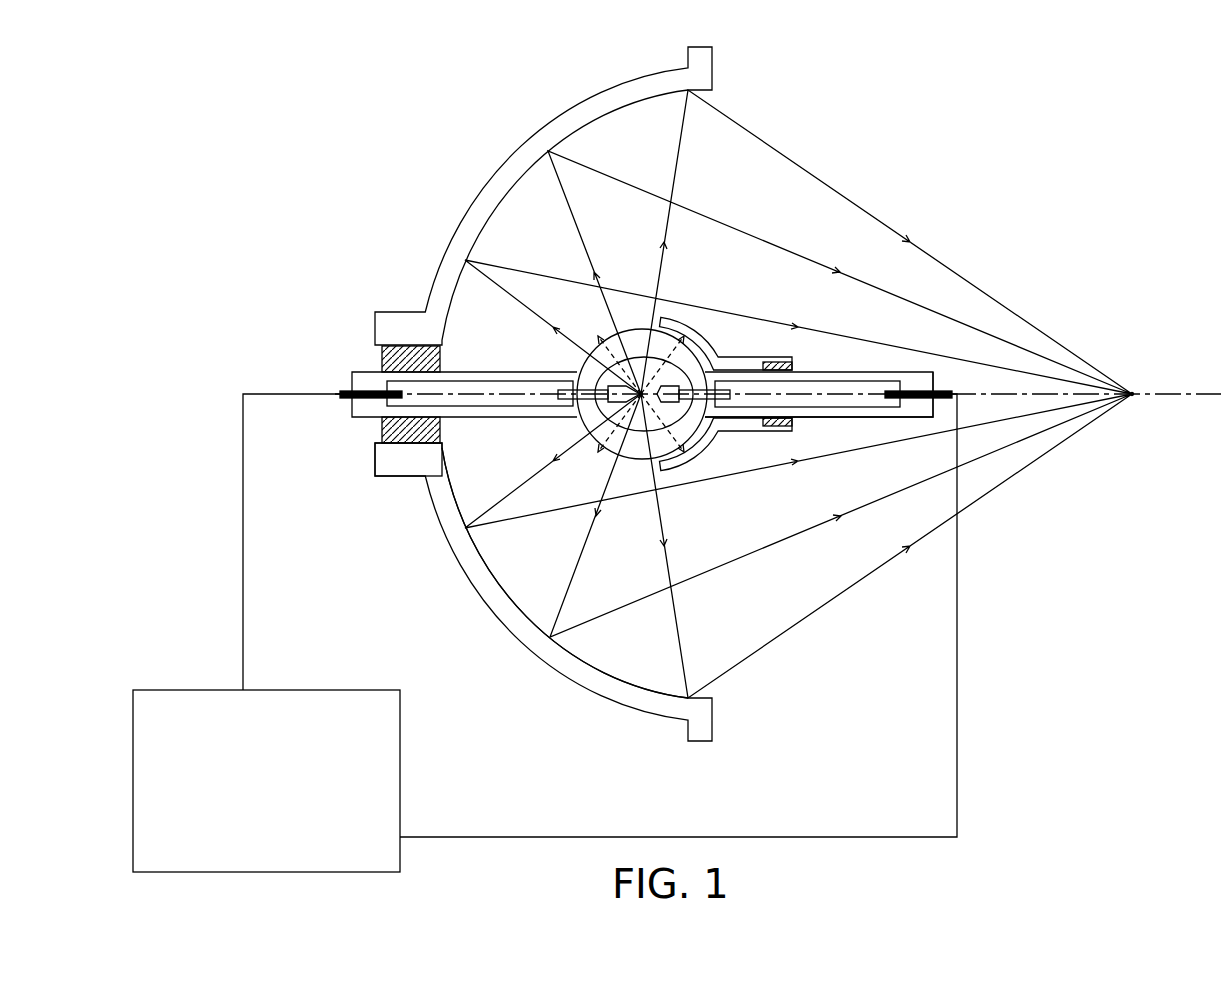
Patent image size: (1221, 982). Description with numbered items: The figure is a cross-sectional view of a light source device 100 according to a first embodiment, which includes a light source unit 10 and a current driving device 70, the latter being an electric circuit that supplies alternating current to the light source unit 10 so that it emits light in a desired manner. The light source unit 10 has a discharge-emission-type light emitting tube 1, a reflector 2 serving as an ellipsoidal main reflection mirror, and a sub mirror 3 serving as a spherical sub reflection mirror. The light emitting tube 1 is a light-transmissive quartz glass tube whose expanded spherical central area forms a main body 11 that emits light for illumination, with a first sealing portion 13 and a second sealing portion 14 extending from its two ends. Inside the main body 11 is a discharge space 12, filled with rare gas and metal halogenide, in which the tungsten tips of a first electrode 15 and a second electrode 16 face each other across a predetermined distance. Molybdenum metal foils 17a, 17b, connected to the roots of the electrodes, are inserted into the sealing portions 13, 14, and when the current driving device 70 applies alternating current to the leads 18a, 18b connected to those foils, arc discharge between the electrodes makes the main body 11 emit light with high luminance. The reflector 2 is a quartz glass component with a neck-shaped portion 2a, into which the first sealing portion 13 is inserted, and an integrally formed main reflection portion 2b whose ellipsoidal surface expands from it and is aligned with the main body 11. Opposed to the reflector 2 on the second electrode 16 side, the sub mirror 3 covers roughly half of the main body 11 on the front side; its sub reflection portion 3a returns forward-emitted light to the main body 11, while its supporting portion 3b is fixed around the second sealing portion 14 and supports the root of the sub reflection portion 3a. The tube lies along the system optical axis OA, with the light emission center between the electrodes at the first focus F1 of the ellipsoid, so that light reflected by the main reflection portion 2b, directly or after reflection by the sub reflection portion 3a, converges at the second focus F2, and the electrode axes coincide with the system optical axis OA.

The light source device 100 is at (1112, 73).
The light source unit 10 is at (822, 127).
The light emitting tube 1 is at (636, 387).
The reflector 2 is at (532, 143).
The neck-shaped portion 2a is at (407, 462).
The main reflection portion 2b is at (520, 638).
The sub mirror 3 is at (730, 383).
The sub reflection portion 3a is at (673, 320).
The supporting portion 3b is at (748, 428).
The main body 11 is at (582, 363).
The discharge space 12 is at (642, 430).
The first sealing portion 13 is at (462, 420).
The second sealing portion 14 is at (862, 420).
The first electrode 15 is at (558, 398).
The second electrode 16 is at (718, 387).
The metal foil 17a is at (481, 375).
The metal foil 17b is at (842, 390).
The lead 18a is at (341, 390).
The lead 18b is at (917, 390).
The current driving device 70 is at (298, 690).
The first focus F1 is at (605, 412).
The second focus F2 is at (1132, 390).
The system optical axis OA is at (1170, 398).